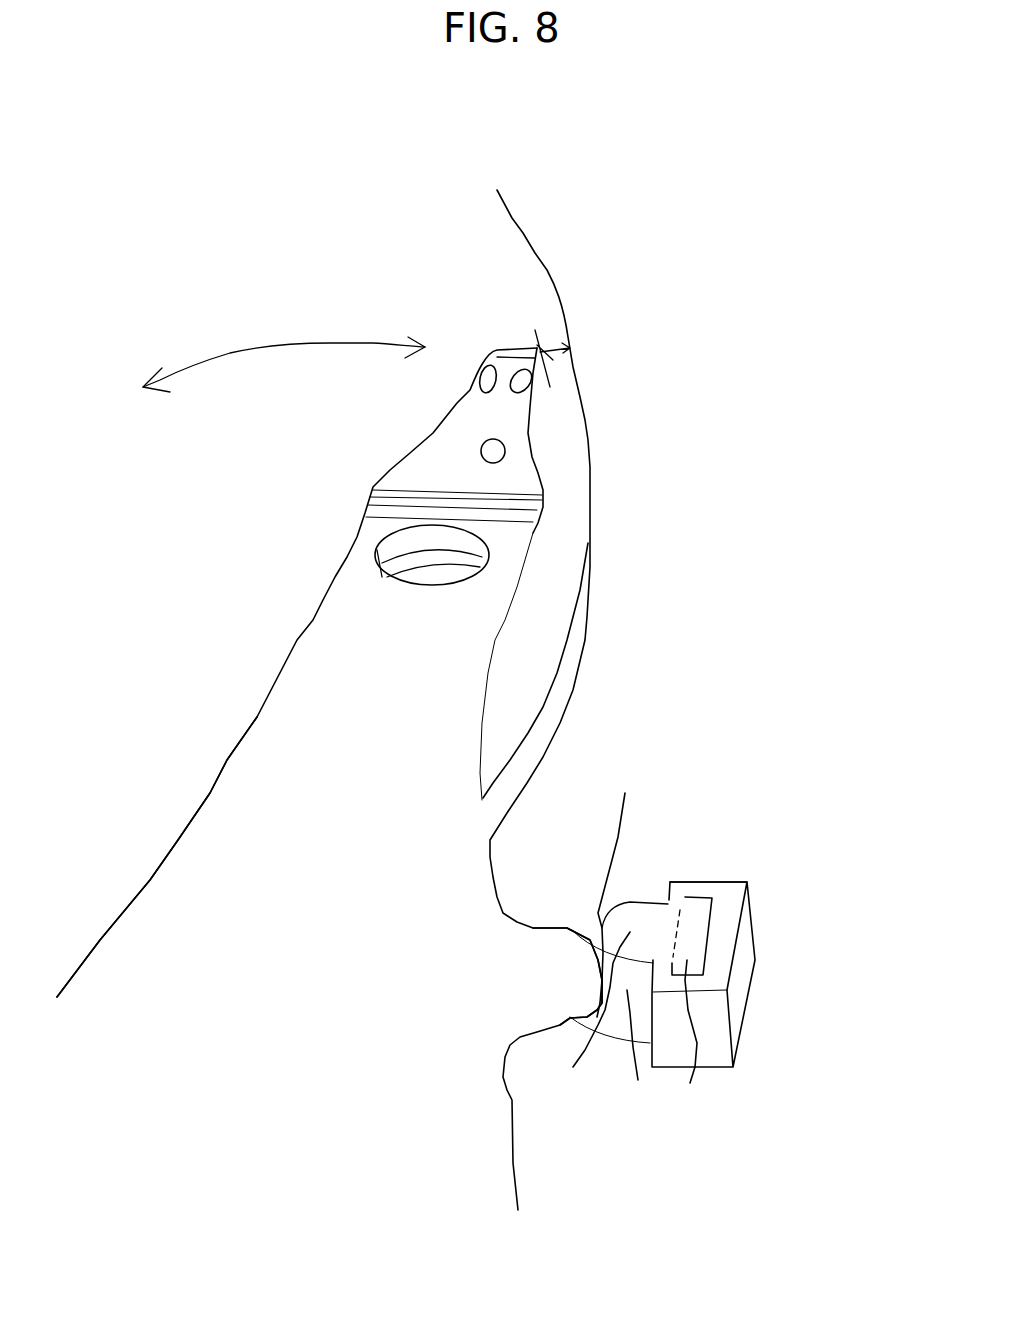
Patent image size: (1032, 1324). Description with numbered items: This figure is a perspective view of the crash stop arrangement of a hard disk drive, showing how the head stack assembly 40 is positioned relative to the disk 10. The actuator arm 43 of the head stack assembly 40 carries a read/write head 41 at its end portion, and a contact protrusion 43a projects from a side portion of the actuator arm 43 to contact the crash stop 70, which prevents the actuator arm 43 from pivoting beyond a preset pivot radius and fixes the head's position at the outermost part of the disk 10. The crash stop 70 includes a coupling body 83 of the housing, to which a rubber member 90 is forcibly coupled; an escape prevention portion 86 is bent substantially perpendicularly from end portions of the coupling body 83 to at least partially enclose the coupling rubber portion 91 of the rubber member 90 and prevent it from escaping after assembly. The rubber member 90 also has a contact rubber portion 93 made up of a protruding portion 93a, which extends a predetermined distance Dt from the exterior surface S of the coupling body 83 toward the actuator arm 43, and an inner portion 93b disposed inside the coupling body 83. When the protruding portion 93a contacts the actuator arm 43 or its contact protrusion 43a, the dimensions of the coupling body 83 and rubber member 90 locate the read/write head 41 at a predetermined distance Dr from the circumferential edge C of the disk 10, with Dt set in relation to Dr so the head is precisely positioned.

The disk pack 10 is at (492, 242).
The head stack assembly 40 is at (288, 589).
The read/write head 41 is at (487, 407).
The actuator arm 43 is at (335, 779).
The contact protrusion 43a is at (547, 975).
The crash stop 70 is at (790, 842).
The coupling body 83 is at (717, 1025).
The escape prevention portion 86 is at (680, 883).
The rubber member 90 is at (703, 1127).
The coupling rubber portion 91 is at (698, 1042).
The contact rubber portion 93 is at (638, 1057).
The protruding portion 93a is at (585, 1023).
The inner portion 93b is at (663, 933).